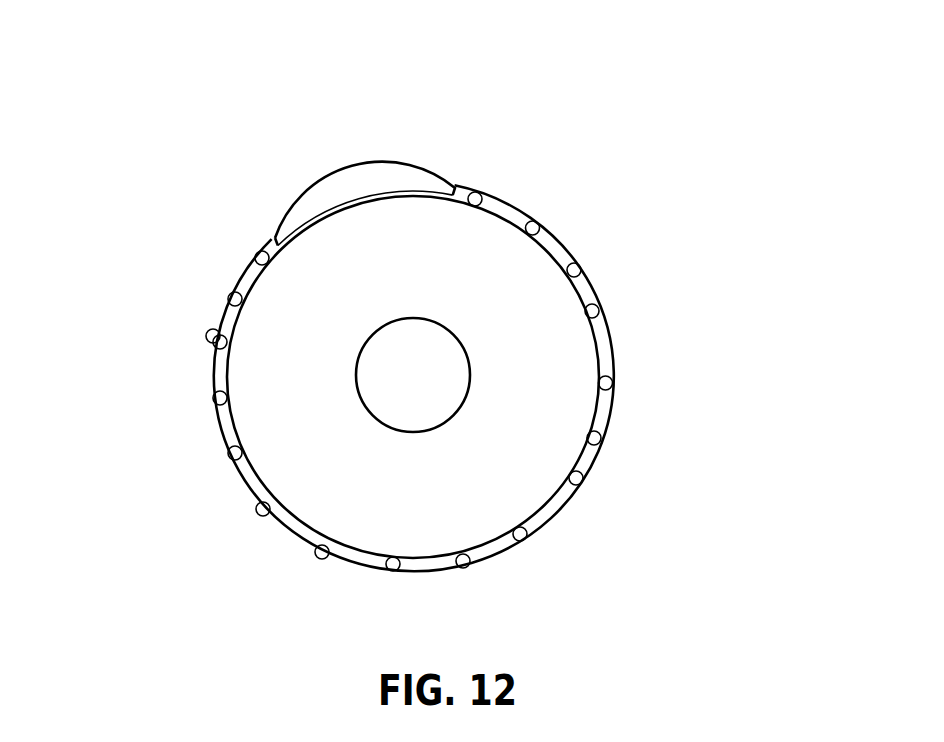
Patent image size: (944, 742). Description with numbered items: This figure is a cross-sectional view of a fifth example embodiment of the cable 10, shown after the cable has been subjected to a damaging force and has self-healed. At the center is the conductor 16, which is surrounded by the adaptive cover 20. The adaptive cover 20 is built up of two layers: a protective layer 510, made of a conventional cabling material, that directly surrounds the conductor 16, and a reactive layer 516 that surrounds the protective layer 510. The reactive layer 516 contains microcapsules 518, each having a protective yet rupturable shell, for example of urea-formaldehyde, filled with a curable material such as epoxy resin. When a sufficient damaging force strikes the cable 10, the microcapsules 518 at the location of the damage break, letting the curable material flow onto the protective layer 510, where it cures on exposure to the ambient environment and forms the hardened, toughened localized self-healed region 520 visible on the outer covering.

The cable 10 is at (170, 135).
The conductor 16 is at (442, 390).
The adaptive cover 20 is at (531, 353).
The protective layer 510 is at (498, 362).
The reactive layer 516 is at (498, 208).
The microcapsules 518 is at (210, 331).
The localized self-healed region 520 is at (358, 163).